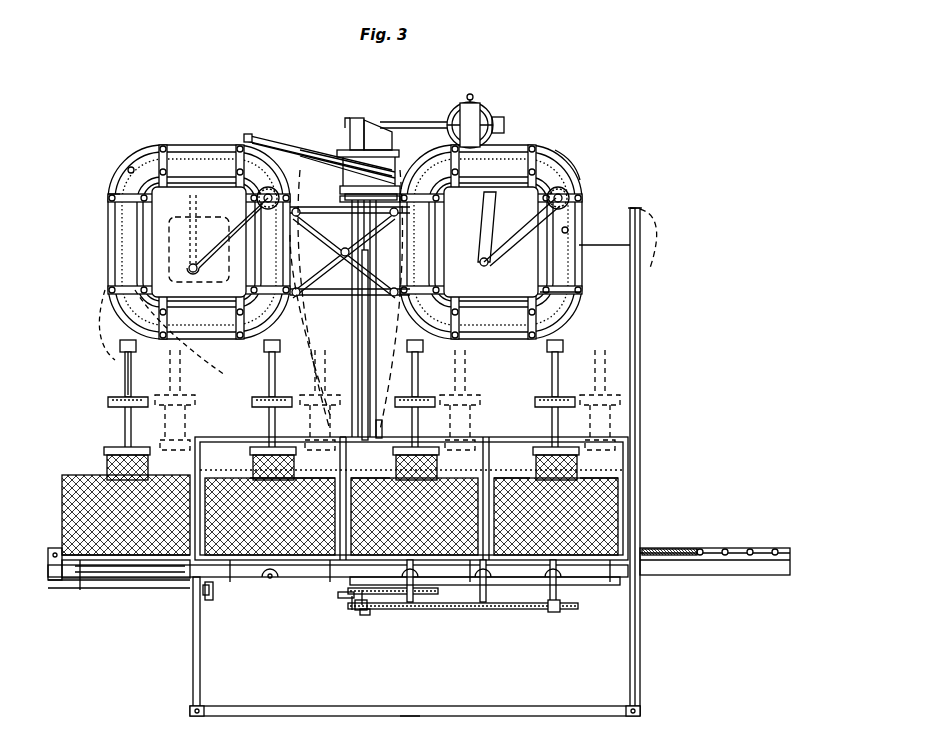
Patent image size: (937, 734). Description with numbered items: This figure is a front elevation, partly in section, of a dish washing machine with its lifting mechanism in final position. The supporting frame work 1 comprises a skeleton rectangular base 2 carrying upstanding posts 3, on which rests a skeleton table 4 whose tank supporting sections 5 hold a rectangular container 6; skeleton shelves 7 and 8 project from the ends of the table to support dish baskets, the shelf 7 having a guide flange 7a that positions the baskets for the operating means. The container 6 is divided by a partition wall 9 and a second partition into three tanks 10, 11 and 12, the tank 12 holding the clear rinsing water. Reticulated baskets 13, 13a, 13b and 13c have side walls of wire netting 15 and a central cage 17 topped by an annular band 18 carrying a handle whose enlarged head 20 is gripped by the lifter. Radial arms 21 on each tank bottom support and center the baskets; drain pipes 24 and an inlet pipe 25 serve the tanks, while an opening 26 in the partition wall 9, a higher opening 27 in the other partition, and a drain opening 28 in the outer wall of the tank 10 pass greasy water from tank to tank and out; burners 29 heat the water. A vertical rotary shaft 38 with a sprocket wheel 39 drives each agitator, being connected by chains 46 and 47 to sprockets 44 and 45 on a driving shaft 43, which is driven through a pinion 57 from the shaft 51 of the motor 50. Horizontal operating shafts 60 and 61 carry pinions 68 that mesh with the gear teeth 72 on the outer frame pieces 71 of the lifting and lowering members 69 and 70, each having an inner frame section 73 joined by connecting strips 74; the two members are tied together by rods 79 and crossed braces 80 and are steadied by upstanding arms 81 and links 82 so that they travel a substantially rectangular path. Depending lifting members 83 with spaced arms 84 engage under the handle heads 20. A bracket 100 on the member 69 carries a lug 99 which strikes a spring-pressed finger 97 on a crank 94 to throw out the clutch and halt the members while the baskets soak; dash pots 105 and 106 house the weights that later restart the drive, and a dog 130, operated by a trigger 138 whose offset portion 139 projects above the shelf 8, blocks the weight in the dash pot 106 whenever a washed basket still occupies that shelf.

The supporting frame work 1 is at (642, 452).
The skeleton rectangular base 2 is at (500, 706).
The upstanding posts 3 is at (200, 684).
The skeleton table 4 is at (190, 600).
The tank supporting sections 5 is at (290, 590).
The rectangular container 6 is at (320, 585).
The skeleton shelf 7 is at (728, 548).
The guide flange 7a is at (658, 548).
The skeleton shelf 8 is at (54, 548).
The partition wall 9 is at (343, 440).
The tank 10 is at (599, 461).
The tank 11 is at (533, 496).
The tank 12 is at (292, 461).
The reticulated basket 13 is at (625, 482).
The reticulated basket 13a is at (455, 500).
The reticulated basket 13b is at (230, 500).
The reticulated basket 13c is at (110, 565).
The wire netting side wall 15 is at (68, 478).
The cylindrical wire net cage 17 is at (107, 460).
The annular band 18 is at (150, 450).
The enlarged annular head 20 is at (124, 382).
The radially extending horizontal arms 21 is at (250, 585).
The drain pipes 24 is at (345, 605).
The inlet pipe 25 is at (205, 595).
The opening 26 is at (494, 470).
The opening 27 is at (352, 478).
The drain opening 28 is at (520, 478).
The heating burners 29 is at (270, 580).
The vertical rotary shaft 38 is at (556, 612).
The sprocket wheel 39 is at (535, 655).
The driving shaft 43 is at (352, 372).
The sprocket 44 is at (342, 600).
The sprocket 45 is at (357, 607).
The chain 46 is at (440, 606).
The chain 47 is at (400, 606).
The motor 50 is at (478, 118).
The motor shaft 51 is at (410, 122).
The pinion 57 is at (372, 128).
The horizontal operating shaft 60 is at (585, 193).
The horizontal operating shaft 61 is at (250, 214).
The pinions 68 is at (280, 185).
The lifting and lowering member 69 is at (570, 165).
The lifting and lowering member 70 is at (180, 148).
The outer frame piece 71 is at (577, 265).
The gear teeth 72 is at (125, 168).
The inner frame section 73 is at (148, 218).
The connecting strips 74 is at (125, 200).
The bars or rods 79 is at (345, 300).
The crossed braces 80 is at (345, 150).
The upstanding arms 81 is at (220, 240).
The links 82 is at (195, 195).
The basket handle engaging and lifting members 83 is at (123, 365).
The spaced arms 84 is at (108, 400).
The crank 94 is at (320, 158).
The spring-pressed finger 97 is at (290, 150).
The projection or lug 99 is at (246, 135).
The bracket 100 is at (298, 148).
The dash pot 105 is at (358, 352).
The dash pot 106 is at (378, 412).
The dog 130 is at (417, 725).
The U-shaped trigger 138 is at (78, 590).
The offset bight portion 139 is at (146, 578).